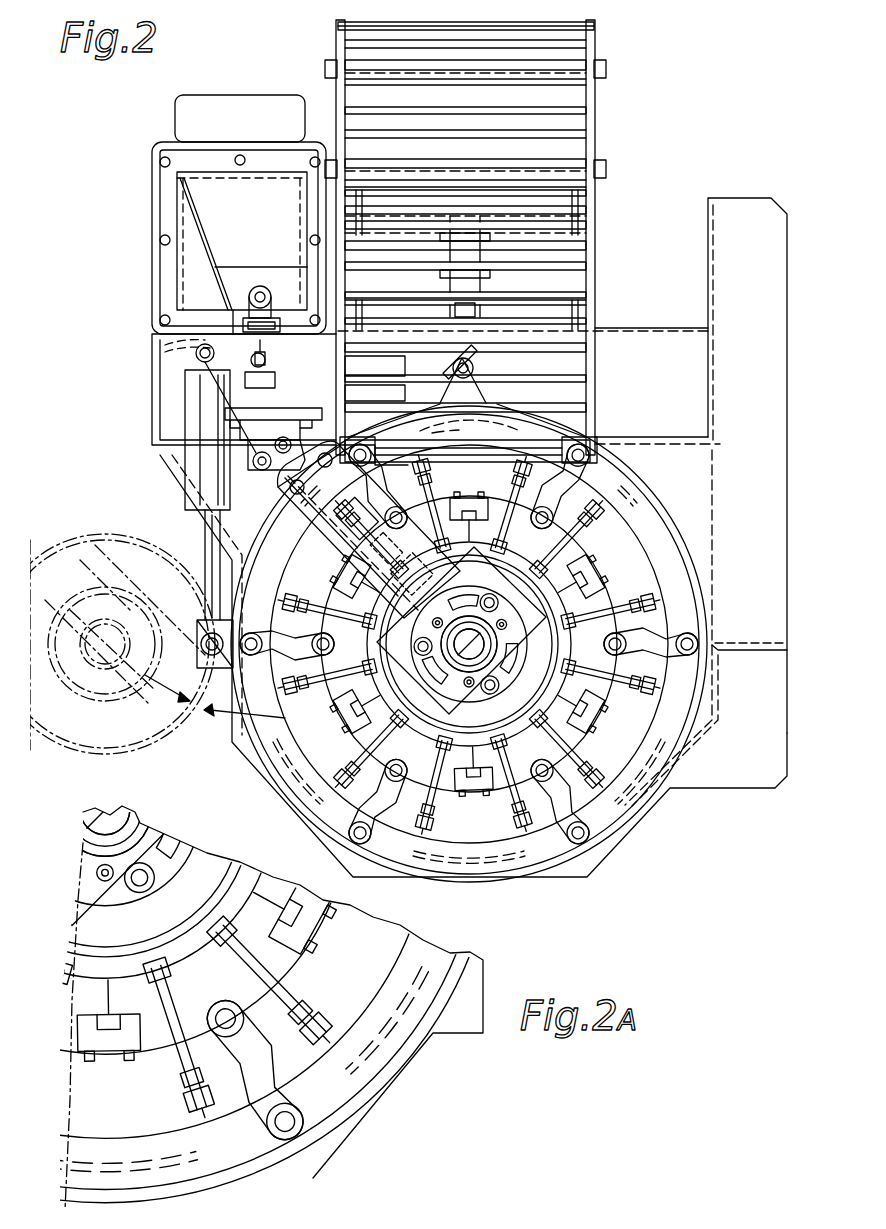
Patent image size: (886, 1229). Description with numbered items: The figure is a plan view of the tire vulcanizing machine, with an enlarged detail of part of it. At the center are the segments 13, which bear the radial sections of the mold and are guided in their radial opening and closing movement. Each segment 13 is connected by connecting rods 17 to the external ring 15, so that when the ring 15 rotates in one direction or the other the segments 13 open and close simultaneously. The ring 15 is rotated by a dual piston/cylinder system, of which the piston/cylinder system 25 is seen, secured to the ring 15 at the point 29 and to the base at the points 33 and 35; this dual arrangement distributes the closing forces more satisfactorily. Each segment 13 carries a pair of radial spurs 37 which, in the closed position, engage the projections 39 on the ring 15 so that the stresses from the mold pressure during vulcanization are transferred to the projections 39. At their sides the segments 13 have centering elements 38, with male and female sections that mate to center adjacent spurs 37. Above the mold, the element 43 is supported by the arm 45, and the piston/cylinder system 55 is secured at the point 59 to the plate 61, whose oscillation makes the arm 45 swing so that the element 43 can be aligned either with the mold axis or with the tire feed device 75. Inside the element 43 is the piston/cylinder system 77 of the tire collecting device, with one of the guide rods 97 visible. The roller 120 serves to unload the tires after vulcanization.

In FIG. 2, the segments 13 is at (410, 749).
In FIG. 2A, the segments 13 is at (215, 990).
In FIG. 2, the external ring 15 is at (690, 575).
In FIG. 2A, the external ring 15 is at (249, 809).
In FIG. 2, the connecting rods 17 is at (497, 678).
In FIG. 2A, the connecting rods 17 is at (158, 1070).
In FIG. 2, the piston/cylinder system 25 is at (190, 495).
In FIG. 2, the securing point on ring 29 is at (197, 628).
In FIG. 2, the securing point on base 33 is at (197, 353).
In FIG. 2, the securing point on base 35 is at (285, 340).
In FIG. 2, the radial spurs 37 is at (469, 645).
In FIG. 2A, the radial spurs 37 is at (213, 979).
In FIG. 2, the centering elements 38 is at (481, 644).
In FIG. 2A, the centering elements 38 is at (208, 963).
In FIG. 2, the projections 39 is at (494, 832).
In FIG. 2A, the projections 39 is at (205, 1095).
In FIG. 2, the element 43 is at (520, 695).
In FIG. 2A, the element 43 is at (116, 788).
In FIG. 2, the arm 45 is at (342, 553).
In FIG. 2, the piston/cylinder system 55 is at (168, 346).
In FIG. 2, the securing point 59 is at (250, 440).
In FIG. 2, the plate 61 is at (233, 448).
In FIG. 2, the tire feed device 75 is at (95, 565).
In FIG. 2, the piston/cylinder system 77 is at (483, 646).
In FIG. 2A, the piston/cylinder system 77 is at (105, 810).
In FIG. 2, the rods 97 is at (500, 600).
In FIG. 2A, the rods 97 is at (92, 810).
In FIG. 2, the roller 120 is at (600, 205).